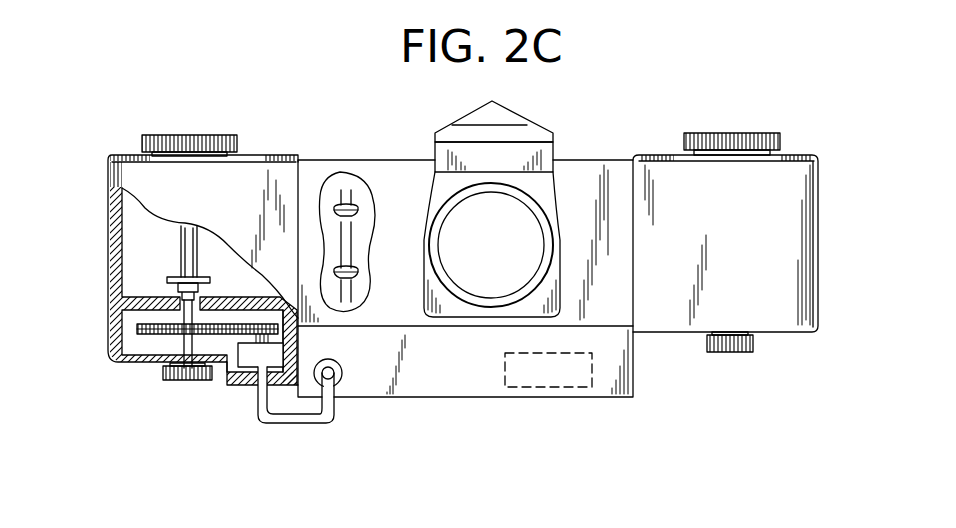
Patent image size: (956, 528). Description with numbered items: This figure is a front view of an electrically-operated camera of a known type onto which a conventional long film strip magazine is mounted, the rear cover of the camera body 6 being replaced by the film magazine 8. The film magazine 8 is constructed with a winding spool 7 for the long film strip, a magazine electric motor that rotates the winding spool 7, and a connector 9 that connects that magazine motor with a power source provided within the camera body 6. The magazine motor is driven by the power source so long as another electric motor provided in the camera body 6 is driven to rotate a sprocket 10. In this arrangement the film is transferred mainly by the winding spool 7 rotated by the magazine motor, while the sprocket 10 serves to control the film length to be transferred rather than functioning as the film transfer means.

The camera body 6 is at (377, 161).
The winding spool 7 is at (178, 250).
The film magazine 8 is at (272, 170).
The connector 9 is at (298, 424).
The sprocket 10 is at (348, 250).